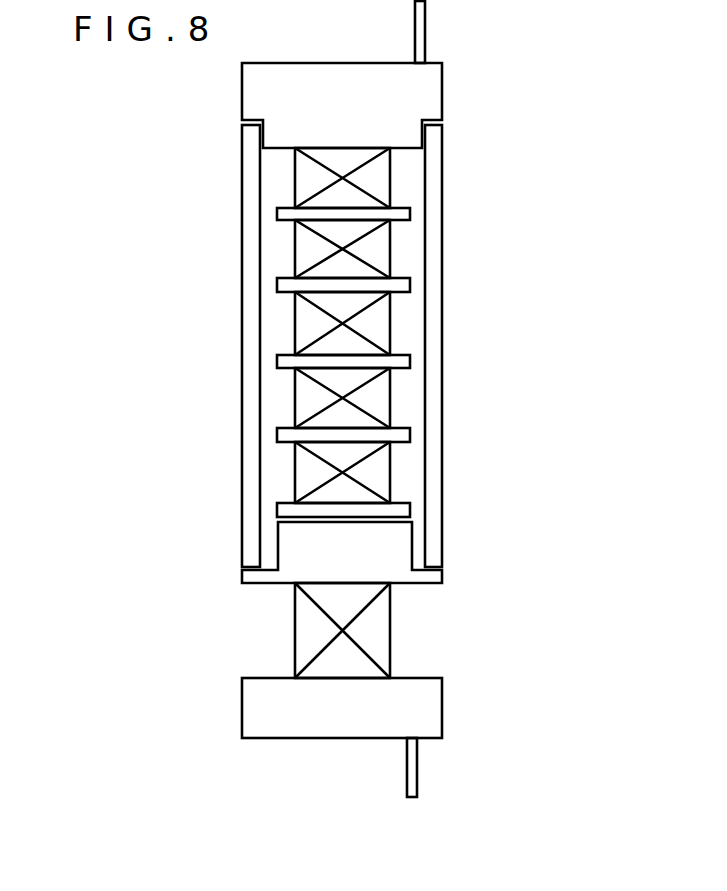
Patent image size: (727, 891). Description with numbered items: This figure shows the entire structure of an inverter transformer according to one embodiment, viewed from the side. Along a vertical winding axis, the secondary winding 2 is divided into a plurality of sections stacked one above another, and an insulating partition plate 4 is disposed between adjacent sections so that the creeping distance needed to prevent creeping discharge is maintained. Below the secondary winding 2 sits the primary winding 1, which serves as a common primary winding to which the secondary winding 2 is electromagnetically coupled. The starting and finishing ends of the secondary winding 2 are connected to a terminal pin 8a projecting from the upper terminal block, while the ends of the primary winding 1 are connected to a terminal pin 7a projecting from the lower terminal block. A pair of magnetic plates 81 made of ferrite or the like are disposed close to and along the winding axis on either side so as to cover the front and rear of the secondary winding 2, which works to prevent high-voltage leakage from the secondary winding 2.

The terminal pin 8a is at (425, 36).
The terminal pin 7a is at (417, 778).
The magnetic plate 81 is at (242, 303).
The secondary winding 2 is at (390, 180).
The insulating partition plate 4 is at (410, 213).
The primary winding 1 is at (390, 635).